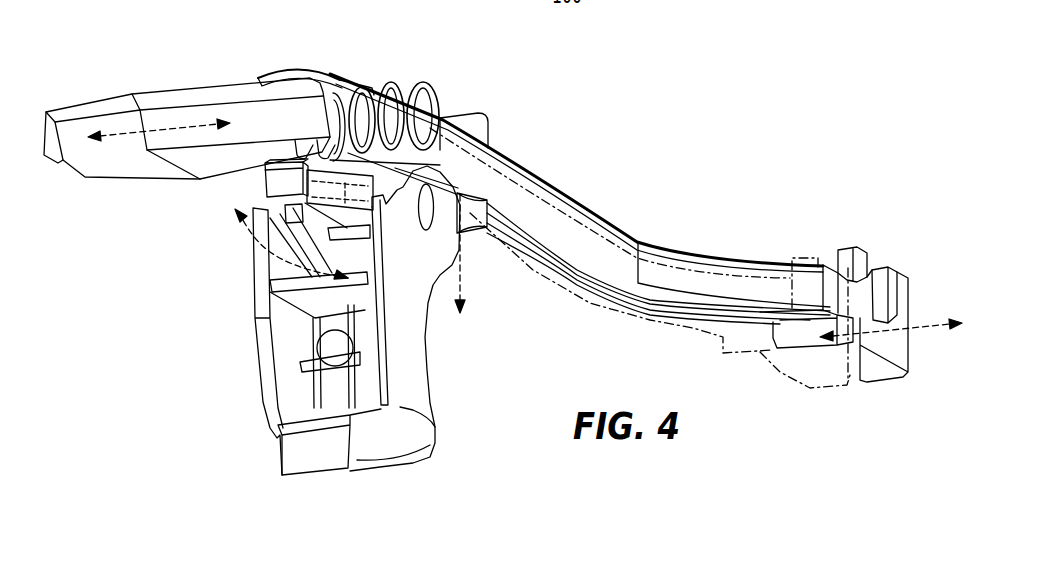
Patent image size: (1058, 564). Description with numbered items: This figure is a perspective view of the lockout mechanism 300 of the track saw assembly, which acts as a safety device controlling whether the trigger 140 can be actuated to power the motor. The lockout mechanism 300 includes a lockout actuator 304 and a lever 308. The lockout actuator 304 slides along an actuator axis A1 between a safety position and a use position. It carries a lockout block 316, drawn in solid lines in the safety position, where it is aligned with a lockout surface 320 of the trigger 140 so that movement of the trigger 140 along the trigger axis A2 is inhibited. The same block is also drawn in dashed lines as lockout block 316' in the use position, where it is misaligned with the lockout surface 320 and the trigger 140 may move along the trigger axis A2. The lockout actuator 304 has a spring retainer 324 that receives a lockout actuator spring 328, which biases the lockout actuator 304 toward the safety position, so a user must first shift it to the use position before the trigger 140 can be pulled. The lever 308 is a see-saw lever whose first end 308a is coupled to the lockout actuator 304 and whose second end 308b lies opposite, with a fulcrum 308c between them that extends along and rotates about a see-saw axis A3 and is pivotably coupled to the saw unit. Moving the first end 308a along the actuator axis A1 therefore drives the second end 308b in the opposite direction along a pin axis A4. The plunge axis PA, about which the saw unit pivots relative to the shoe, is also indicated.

The lockout actuator 304 is at (253, 93).
The lever 308 is at (612, 240).
The first end 308a is at (323, 58).
The second end 308b is at (899, 252).
The fulcrum 308c is at (466, 188).
The lockout block 316 is at (271, 197).
The lockout block 316' is at (639, 235).
The lockout surface 320 is at (333, 232).
The spring retainer 324 is at (366, 85).
The lockout actuator spring 328 is at (406, 86).
The trigger 140 is at (428, 446).
The lockout mechanism 300 is at (718, 134).
The actuator axis A1 is at (159, 128).
The trigger axis A2 is at (265, 273).
The see-saw axis A3 is at (461, 278).
The pin axis A4 is at (920, 325).
The plunge axis PA is at (707, 15).